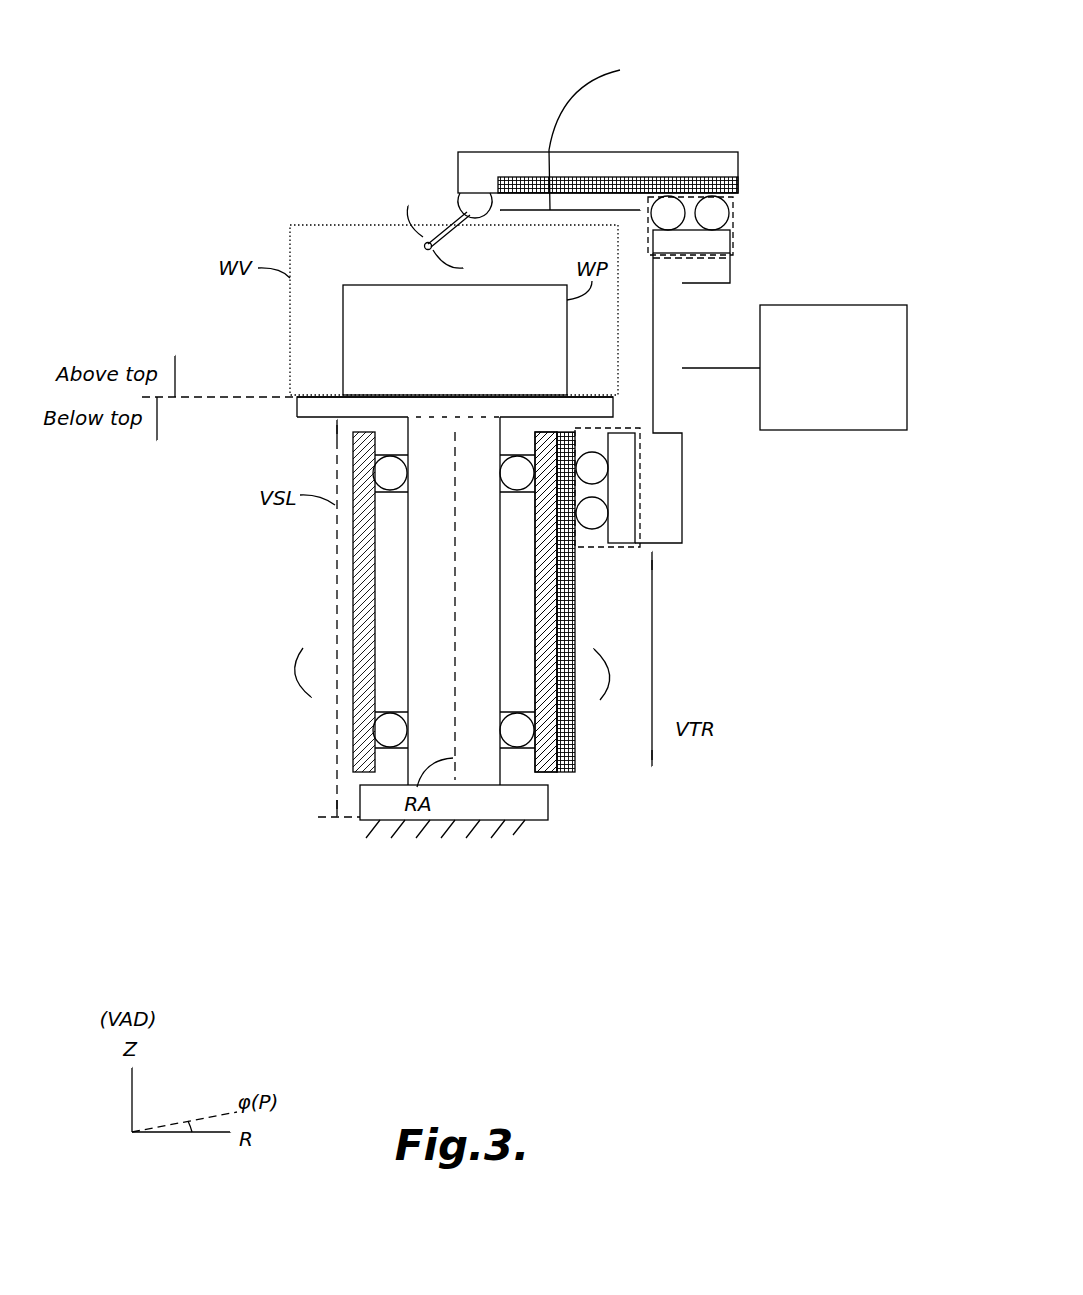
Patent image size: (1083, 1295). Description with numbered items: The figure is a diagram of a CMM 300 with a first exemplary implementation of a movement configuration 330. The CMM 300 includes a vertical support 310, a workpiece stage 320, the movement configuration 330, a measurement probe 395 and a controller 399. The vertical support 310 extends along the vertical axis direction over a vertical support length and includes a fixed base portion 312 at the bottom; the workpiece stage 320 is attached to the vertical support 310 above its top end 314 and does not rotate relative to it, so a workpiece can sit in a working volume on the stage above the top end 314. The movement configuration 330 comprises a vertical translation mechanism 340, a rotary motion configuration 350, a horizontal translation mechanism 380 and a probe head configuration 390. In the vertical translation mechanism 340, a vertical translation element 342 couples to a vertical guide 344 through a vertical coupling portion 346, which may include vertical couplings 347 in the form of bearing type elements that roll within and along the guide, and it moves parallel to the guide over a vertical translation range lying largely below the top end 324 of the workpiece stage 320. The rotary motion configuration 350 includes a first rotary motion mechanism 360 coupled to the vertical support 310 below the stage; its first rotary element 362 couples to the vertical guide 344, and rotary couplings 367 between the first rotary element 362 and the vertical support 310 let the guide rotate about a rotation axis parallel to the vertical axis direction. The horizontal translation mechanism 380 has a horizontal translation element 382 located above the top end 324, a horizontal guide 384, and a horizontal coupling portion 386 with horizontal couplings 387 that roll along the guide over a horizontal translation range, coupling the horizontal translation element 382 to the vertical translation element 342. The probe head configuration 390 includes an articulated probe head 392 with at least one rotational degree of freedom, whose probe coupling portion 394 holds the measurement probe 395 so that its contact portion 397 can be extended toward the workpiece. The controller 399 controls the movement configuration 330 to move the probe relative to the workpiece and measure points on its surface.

The CMM 300 is at (765, 46).
The vertical support 310 is at (438, 547).
The fixed base portion 312 is at (513, 812).
The top end 314 is at (482, 417).
The workpiece stage 320 is at (297, 404).
The top end 324 is at (330, 393).
The movement configuration 330 is at (734, 838).
The vertical translation mechanism 340 is at (773, 545).
The vertical translation element 342 is at (668, 435).
The vertical guide 344 is at (560, 573).
The vertical coupling portion 346 is at (592, 529).
The vertical couplings 347 is at (575, 560).
The rotary motion configuration 350 is at (160, 808).
The first rotary motion mechanism 360 is at (245, 772).
The first rotary element 362 is at (357, 760).
The rotary couplings 367 is at (407, 752).
The horizontal translation mechanism 380 is at (813, 130).
The horizontal translation element 382 is at (738, 157).
The horizontal guide 384 is at (738, 187).
The horizontal coupling portion 386 is at (731, 247).
The horizontal couplings 387 is at (720, 218).
The probe head configuration 390 is at (386, 166).
The articulated probe head 392 is at (487, 214).
The probe coupling portion 394 is at (461, 207).
The measurement probe 395 is at (456, 225).
The contact portion 397 is at (425, 252).
The controller 399 is at (846, 305).